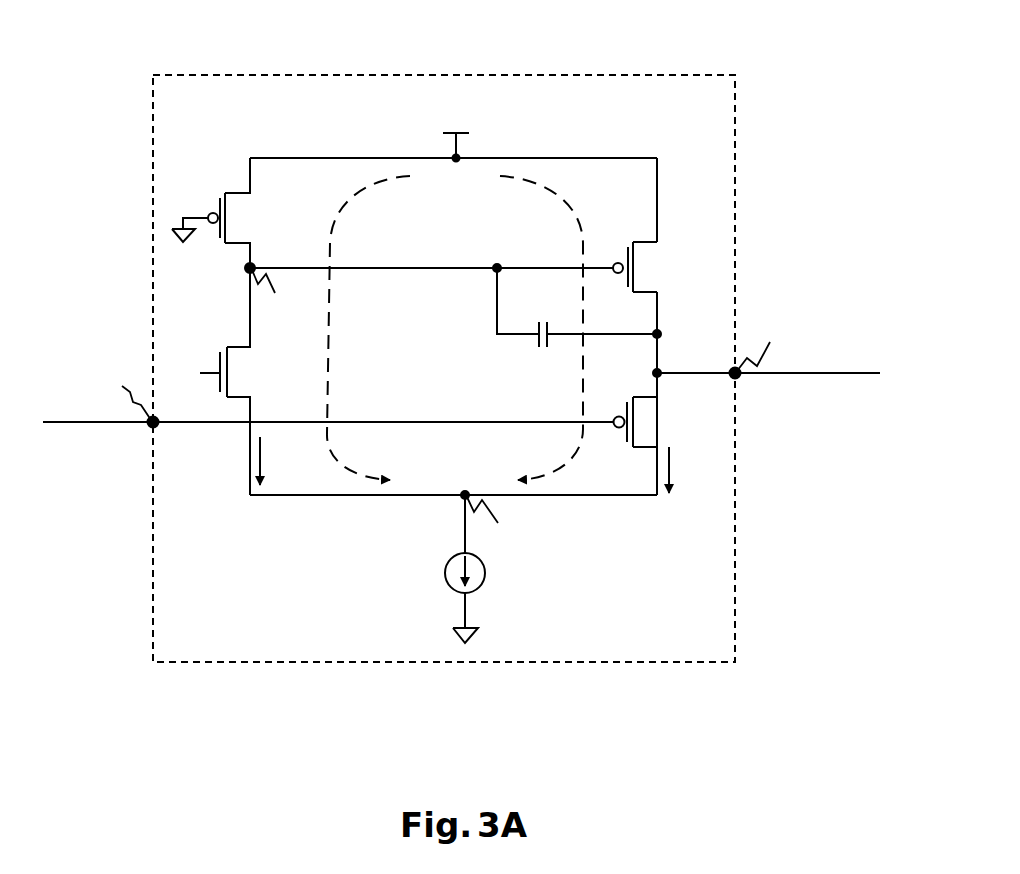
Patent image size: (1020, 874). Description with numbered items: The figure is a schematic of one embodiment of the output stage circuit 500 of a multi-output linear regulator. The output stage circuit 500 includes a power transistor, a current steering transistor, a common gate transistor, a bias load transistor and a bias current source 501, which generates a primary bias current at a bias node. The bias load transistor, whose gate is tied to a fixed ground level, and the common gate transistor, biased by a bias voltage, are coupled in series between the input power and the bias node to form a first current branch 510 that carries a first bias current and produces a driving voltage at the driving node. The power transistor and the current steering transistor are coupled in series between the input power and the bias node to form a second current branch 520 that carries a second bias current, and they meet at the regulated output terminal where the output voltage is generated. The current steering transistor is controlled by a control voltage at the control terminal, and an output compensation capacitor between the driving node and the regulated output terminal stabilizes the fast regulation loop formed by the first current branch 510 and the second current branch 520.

The output stage circuit 500 is at (645, 74).
The bias current source 501 is at (483, 583).
The first current branch 510 is at (380, 180).
The second current branch 520 is at (533, 178).